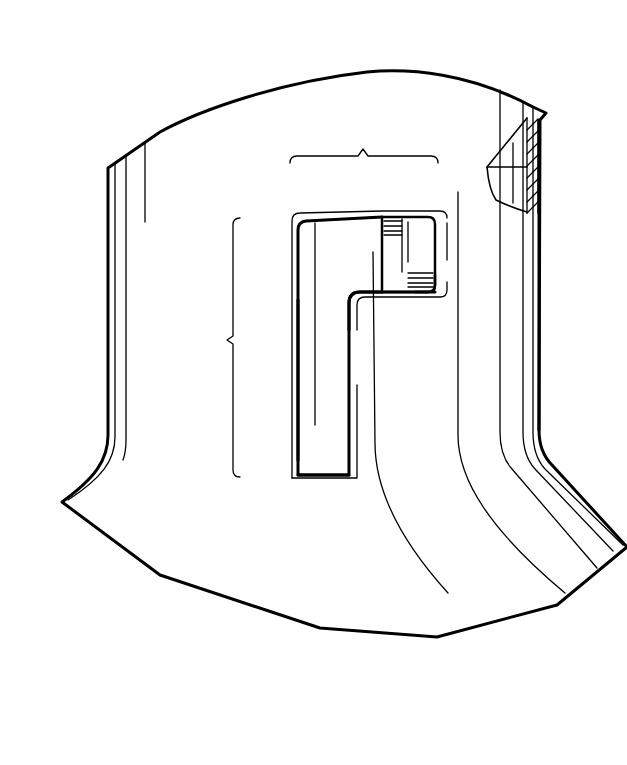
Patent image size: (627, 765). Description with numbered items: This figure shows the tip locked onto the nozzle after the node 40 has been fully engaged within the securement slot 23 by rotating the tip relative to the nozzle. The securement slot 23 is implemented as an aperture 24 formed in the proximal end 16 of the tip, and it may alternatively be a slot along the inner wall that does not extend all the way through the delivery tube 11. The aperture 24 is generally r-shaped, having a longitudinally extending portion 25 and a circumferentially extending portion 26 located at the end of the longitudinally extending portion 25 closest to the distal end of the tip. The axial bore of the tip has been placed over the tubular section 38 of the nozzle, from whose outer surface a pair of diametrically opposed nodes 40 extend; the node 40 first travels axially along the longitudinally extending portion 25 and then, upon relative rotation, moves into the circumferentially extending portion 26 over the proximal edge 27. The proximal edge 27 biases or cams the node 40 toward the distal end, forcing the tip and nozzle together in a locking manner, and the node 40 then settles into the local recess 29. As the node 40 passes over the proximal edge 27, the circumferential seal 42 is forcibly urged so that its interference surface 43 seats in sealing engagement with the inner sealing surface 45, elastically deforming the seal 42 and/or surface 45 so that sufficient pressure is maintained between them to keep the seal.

The delivery tube 11 is at (541, 307).
The proximal end 16 is at (182, 90).
The securement slot 23 is at (347, 445).
The aperture 24 is at (301, 377).
The longitudinally extending portion 25 is at (214, 347).
The circumferentially extending portion 26 is at (364, 141).
The proximal edge 27 is at (380, 292).
The local recess 29 is at (424, 295).
The tubular section 38 is at (338, 386).
The node 40 is at (420, 227).
The circumferential seal 42 is at (488, 157).
The interference surface 43 is at (513, 158).
The inner sealing surface 45 is at (532, 196).